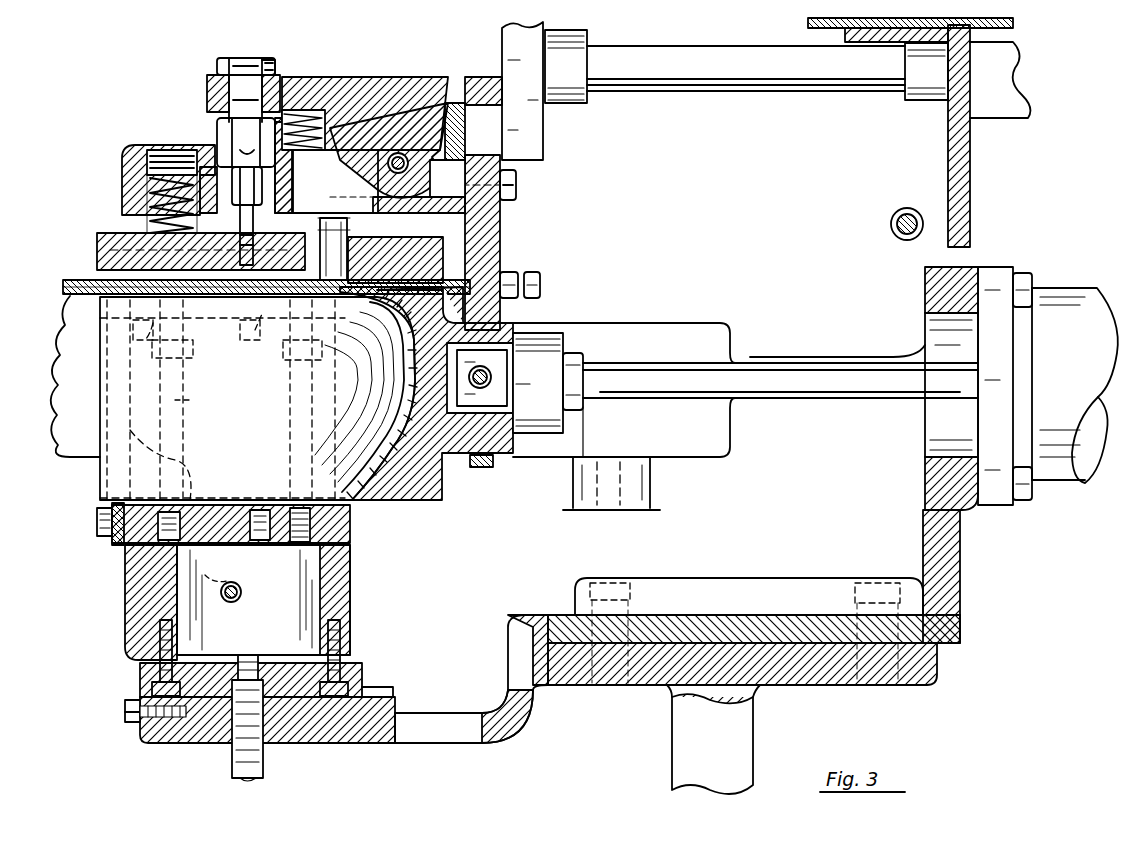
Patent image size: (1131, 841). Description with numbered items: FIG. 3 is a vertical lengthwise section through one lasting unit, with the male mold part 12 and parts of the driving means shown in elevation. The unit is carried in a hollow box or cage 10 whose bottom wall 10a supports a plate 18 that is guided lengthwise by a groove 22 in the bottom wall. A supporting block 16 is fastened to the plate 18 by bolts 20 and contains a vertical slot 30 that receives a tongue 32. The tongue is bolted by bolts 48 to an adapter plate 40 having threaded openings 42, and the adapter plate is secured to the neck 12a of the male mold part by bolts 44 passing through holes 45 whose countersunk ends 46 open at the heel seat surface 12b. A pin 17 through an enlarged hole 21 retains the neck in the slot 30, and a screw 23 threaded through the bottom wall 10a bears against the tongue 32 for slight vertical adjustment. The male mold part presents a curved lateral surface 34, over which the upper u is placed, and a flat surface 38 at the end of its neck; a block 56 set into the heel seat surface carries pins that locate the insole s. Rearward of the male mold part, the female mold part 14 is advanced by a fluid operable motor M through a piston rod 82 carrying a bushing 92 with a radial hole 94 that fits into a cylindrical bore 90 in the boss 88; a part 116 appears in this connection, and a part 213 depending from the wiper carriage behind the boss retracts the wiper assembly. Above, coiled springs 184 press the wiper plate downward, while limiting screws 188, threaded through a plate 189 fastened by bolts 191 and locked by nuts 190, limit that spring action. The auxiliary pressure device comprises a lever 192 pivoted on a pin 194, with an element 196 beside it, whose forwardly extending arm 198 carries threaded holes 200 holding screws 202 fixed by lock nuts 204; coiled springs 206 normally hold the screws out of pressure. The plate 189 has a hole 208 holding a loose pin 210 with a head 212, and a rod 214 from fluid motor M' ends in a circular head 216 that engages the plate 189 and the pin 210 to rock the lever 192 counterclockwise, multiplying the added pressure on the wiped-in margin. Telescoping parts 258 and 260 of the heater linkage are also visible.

The threaded holes 200 is at (233, 60).
The lock nuts 204 is at (275, 45).
The screws 202 is at (220, 90).
The forwardly extending arm 198 is at (208, 100).
The coiled springs 206 is at (305, 110).
The coiled springs 184 is at (127, 176).
The bolts 191 is at (95, 252).
The insole S is at (62, 283).
The lever 192 is at (392, 80).
The pin 194 is at (335, 181).
The pocket wall 196 is at (370, 194).
The pin 210 is at (455, 102).
The head 212 is at (478, 112).
The circular head 216 is at (503, 42).
The rod 214 is at (750, 92).
The fluid motor M' is at (919, 132).
The telescoping part 260 is at (890, 223).
The telescoping part 258 is at (900, 235).
The hole 208 is at (520, 140).
The plate 189 is at (500, 222).
The limiting screws 188 is at (475, 280).
The nuts 190 is at (520, 278).
The female mold part 14 is at (462, 486).
The male mold part 12 is at (250, 396).
The heel seat surface 12b is at (70, 296).
The countersinks 46 is at (152, 322).
The block 56 is at (237, 339).
The bolts 44 is at (197, 405).
The holes 45 is at (293, 458).
The neck 12a is at (232, 495).
The adapter plate 40 is at (352, 538).
The flat surface 38 is at (96, 516).
The threaded openings 42 is at (160, 548).
The lateral surface 34 is at (352, 500).
The surface u is at (434, 527).
The block 16 is at (130, 607).
The slot 30 is at (340, 580).
The tongue 32 is at (318, 615).
The bolts 48 is at (220, 569).
The enlarged hole 21 is at (228, 602).
The pin 17 is at (268, 604).
The bolts 20 is at (345, 652).
The plate 18 is at (352, 670).
The bottom wall 10a is at (345, 742).
The screw 23 is at (232, 766).
The groove 22 is at (398, 710).
The box 10 is at (552, 704).
The housing 116 is at (720, 440).
The radial hole 94 is at (493, 378).
The bushing 92 is at (540, 348).
The cylindrical bore 90 is at (515, 415).
The boss 88 is at (500, 330).
The part 213 is at (482, 470).
The piston rod 82 is at (783, 362).
The fluid operable motor M is at (1020, 443).